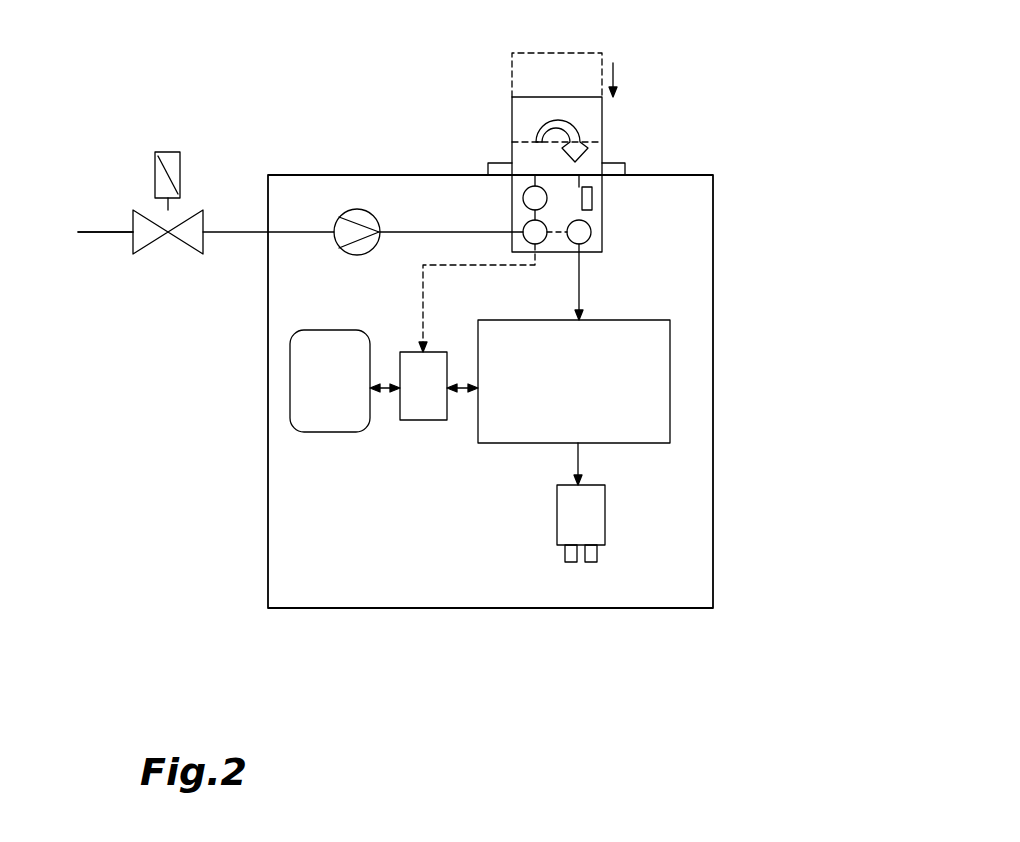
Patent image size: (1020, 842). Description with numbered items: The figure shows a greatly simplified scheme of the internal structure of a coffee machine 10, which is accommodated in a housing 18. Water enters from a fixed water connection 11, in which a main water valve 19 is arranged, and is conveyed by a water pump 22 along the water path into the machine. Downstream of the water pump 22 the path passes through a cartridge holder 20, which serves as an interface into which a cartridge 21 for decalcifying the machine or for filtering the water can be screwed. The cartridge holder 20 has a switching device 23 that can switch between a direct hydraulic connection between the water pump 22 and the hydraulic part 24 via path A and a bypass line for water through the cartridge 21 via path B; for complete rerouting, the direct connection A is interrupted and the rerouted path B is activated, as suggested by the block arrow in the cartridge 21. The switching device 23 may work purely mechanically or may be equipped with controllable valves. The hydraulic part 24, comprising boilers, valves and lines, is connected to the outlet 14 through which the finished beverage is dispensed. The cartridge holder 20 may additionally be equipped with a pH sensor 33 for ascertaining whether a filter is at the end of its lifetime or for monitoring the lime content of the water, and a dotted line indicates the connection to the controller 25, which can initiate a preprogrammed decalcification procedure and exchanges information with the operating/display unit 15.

The coffee machine 10 is at (376, 549).
The fixed water connection 11 is at (112, 230).
The outlet 14 is at (590, 508).
The operating/display unit 15 is at (302, 398).
The housing 18 is at (713, 365).
The main water valve 19 is at (147, 238).
The cartridge holder 20 is at (640, 150).
The cartridge 21 is at (510, 108).
The water pump 22 is at (352, 210).
The switching device 23 is at (617, 219).
The hydraulic part 24 is at (596, 391).
The controller 25 is at (423, 408).
The pH sensor 33 is at (593, 198).
The path A is at (556, 236).
The path B is at (540, 213).